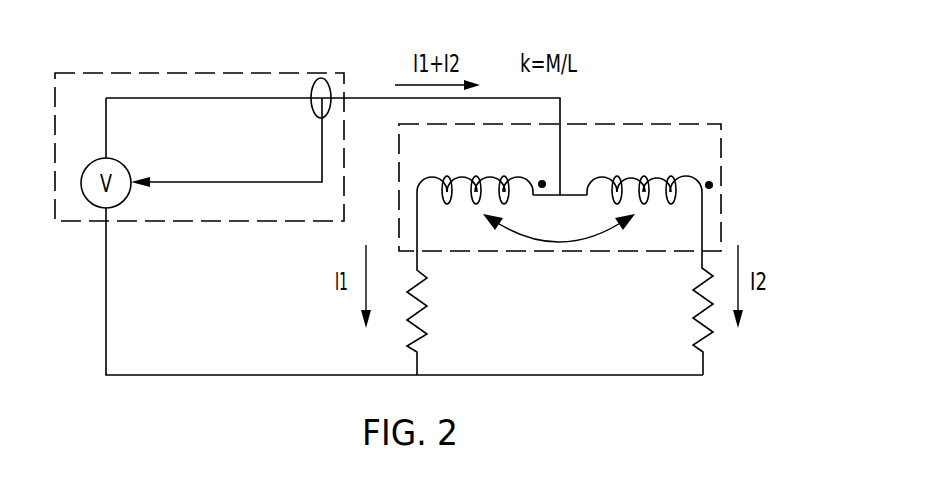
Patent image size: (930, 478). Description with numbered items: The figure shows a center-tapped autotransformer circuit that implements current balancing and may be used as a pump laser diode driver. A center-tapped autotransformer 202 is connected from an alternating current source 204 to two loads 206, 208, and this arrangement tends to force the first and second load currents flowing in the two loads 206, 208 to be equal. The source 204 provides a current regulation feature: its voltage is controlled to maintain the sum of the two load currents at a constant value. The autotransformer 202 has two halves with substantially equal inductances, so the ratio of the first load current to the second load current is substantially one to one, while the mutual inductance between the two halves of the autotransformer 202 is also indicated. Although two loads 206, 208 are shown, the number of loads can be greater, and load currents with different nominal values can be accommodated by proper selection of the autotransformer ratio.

The center-tapped autotransformer 202 is at (670, 124).
The alternating current source 204 is at (160, 73).
The load 206 is at (428, 326).
The load 208 is at (693, 316).